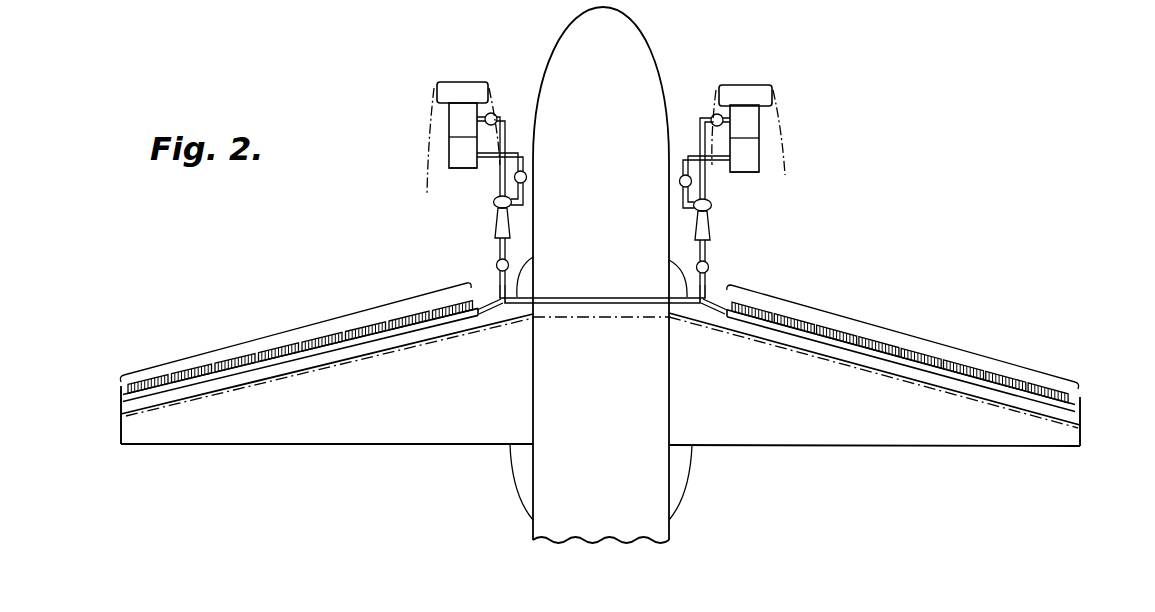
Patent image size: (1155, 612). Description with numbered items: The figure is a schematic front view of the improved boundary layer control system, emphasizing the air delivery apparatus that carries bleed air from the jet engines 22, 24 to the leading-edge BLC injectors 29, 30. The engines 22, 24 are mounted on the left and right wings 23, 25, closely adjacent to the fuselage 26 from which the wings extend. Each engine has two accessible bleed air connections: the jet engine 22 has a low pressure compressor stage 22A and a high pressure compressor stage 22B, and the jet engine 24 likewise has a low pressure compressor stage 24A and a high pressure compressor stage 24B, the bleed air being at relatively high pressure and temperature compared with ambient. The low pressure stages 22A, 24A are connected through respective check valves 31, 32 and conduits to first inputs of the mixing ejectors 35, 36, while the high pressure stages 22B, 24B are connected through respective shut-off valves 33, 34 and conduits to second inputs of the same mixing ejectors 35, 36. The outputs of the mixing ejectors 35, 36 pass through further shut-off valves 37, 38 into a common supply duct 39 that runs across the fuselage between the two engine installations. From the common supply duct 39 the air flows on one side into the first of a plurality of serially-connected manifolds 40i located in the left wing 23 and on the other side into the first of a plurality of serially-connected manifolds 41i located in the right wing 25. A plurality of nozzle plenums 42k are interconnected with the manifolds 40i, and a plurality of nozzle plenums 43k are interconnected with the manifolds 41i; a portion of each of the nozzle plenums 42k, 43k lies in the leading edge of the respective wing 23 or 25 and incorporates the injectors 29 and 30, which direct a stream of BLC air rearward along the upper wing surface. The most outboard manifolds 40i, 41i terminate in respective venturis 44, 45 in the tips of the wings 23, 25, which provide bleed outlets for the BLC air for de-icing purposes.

The jet engine 22 is at (433, 117).
The low pressure compressor stage 22A is at (449, 118).
The high pressure compressor stage 22B is at (449, 153).
The left wing 23 is at (345, 446).
The jet engine 24 is at (776, 109).
The low pressure compressor stage 24A is at (760, 122).
The high pressure compressor stage 24B is at (760, 157).
The right wing 25 is at (852, 447).
The fuselage 26 is at (540, 520).
The BLC injector 29 is at (380, 297).
The BLC injector 30 is at (925, 321).
The check valve 31 is at (497, 114).
The check valve 32 is at (711, 115).
The shut-off valve 33 is at (527, 177).
The shut-off valve 34 is at (679, 181).
The mixing ejector 35 is at (496, 221).
The mixing ejector 36 is at (711, 226).
The shut-off valve 37 is at (496, 265).
The shut-off valve 38 is at (709, 267).
The common supply duct 39 is at (603, 304).
The serially-connected manifolds 40i is at (170, 394).
The serially-connected manifolds 41i is at (760, 322).
The nozzle plenums 42k is at (318, 340).
The nozzle plenums 43k is at (905, 333).
The venturi 44 is at (121, 410).
The venturi 45 is at (1082, 414).